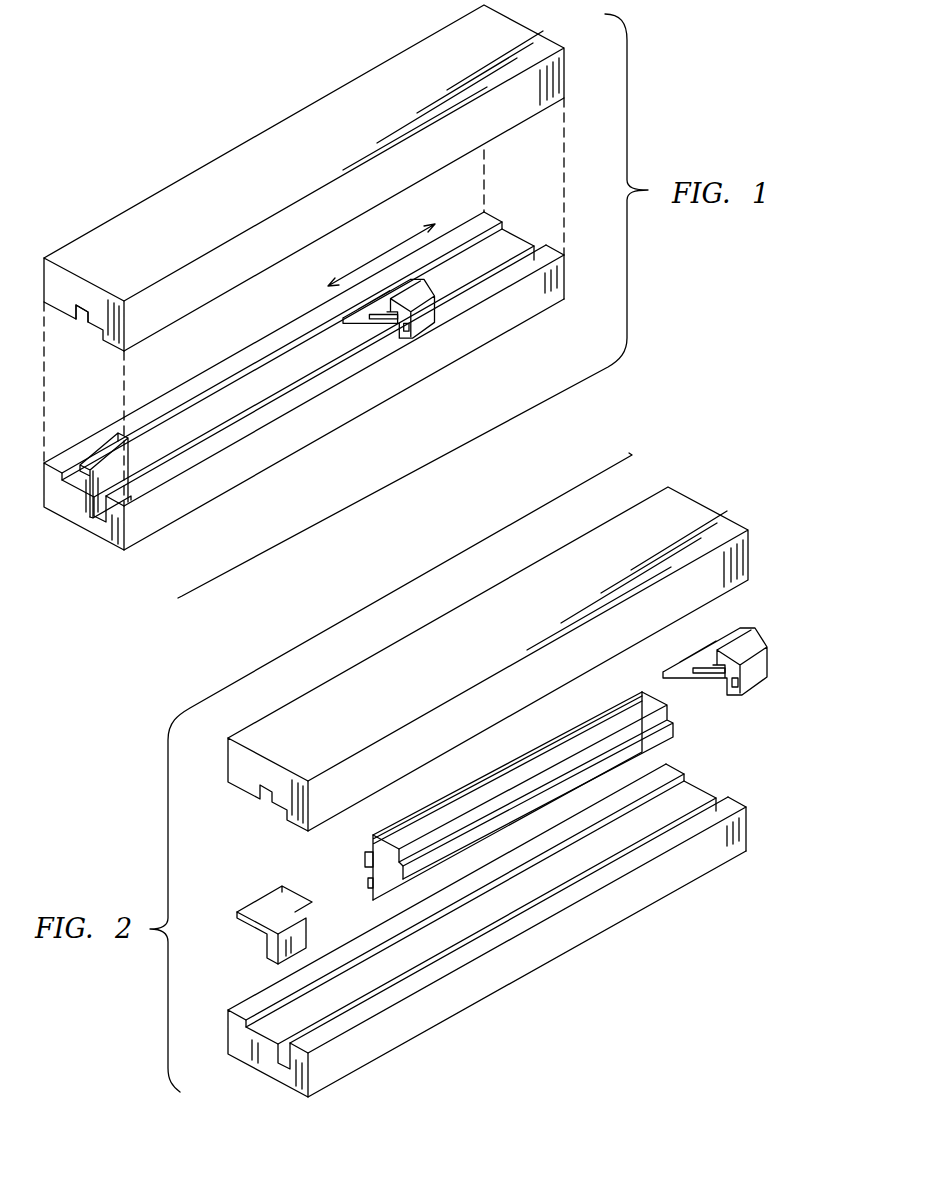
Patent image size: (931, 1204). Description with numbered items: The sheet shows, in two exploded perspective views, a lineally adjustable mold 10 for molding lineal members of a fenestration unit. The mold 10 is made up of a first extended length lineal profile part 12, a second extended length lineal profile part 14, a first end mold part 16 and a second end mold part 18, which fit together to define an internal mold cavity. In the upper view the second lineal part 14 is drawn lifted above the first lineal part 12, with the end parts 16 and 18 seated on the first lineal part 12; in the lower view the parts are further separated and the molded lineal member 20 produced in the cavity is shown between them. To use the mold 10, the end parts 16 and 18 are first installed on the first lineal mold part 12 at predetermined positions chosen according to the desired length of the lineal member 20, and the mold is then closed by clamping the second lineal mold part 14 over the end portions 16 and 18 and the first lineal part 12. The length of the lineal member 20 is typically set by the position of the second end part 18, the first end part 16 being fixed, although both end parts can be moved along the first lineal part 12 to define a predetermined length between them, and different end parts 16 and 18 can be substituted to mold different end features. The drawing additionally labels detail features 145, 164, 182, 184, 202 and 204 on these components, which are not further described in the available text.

In FIG. 1, the mold 10 is at (224, 101).
In FIG. 1, the first extended length lineal profile part 12 is at (330, 418).
In FIG. 2, the first extended length lineal profile part 12 is at (514, 972).
In FIG. 1, the second extended length lineal profile part 14 is at (228, 283).
In FIG. 2, the second extended length lineal profile part 14 is at (683, 503).
In FIG. 1, the notch of upper rail member 145 is at (86, 326).
In FIG. 1, the first end mold part 16 is at (112, 486).
In FIG. 2, the first end mold part 16 is at (262, 930).
In FIG. 1, the stem of end clip 164 is at (90, 514).
In FIG. 1, the second end mold part 18 is at (433, 292).
In FIG. 2, the second end mold part 18 is at (760, 641).
In FIG. 1, the tab of sliding clip 182 is at (410, 327).
In FIG. 2, the tab of sliding clip 182 is at (742, 688).
In FIG. 1, the slot of sliding clip 184 is at (372, 320).
In FIG. 2, the slot of sliding clip 184 is at (710, 672).
In FIG. 2, the lineal member 20 is at (666, 724).
In FIG. 2, the upper tab of slide rail 202 is at (365, 860).
In FIG. 2, the lower tab of slide rail 204 is at (368, 884).